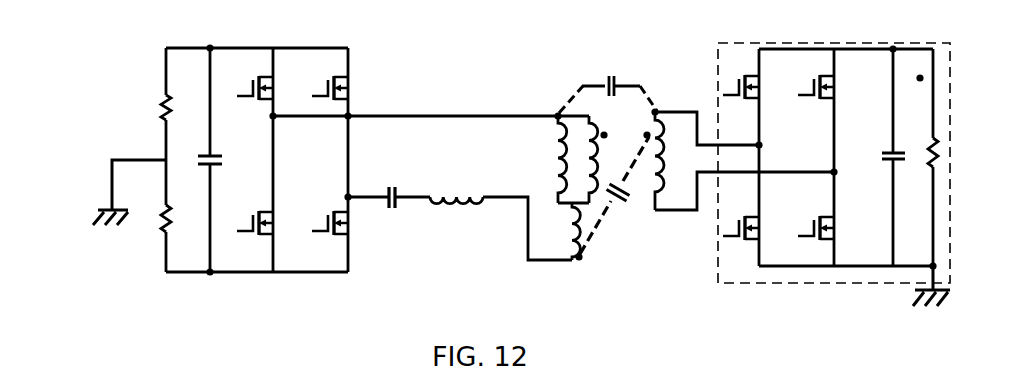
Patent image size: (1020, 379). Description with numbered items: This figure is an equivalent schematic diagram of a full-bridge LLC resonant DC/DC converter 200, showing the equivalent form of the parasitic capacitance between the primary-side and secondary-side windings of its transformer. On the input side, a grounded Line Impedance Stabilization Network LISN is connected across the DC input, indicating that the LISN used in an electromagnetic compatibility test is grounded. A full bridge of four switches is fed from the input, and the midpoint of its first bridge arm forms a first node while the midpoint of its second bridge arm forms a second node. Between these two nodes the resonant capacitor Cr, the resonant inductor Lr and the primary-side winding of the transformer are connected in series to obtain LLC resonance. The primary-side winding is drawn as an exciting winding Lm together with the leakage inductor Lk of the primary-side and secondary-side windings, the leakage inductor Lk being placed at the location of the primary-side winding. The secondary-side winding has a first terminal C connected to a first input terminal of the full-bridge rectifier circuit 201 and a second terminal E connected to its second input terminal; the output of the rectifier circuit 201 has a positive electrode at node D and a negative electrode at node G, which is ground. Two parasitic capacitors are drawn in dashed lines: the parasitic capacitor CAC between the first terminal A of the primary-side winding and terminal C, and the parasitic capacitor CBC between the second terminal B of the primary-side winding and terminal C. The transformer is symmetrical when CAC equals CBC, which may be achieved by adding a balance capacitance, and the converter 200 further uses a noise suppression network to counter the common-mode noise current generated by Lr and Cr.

The DC/DC converter 200 is at (86, 35).
The rectifier circuit 201 is at (756, 35).
The Line Impedance Stabilization Network LISN is at (134, 160).
The resonant capacitor Cr is at (394, 184).
The resonant inductor Lr is at (456, 182).
The exciting winding Lm is at (563, 159).
The leakage inductor Lk is at (560, 231).
The parasitic capacitor CAC is at (608, 78).
The parasitic capacitor CBC is at (615, 195).